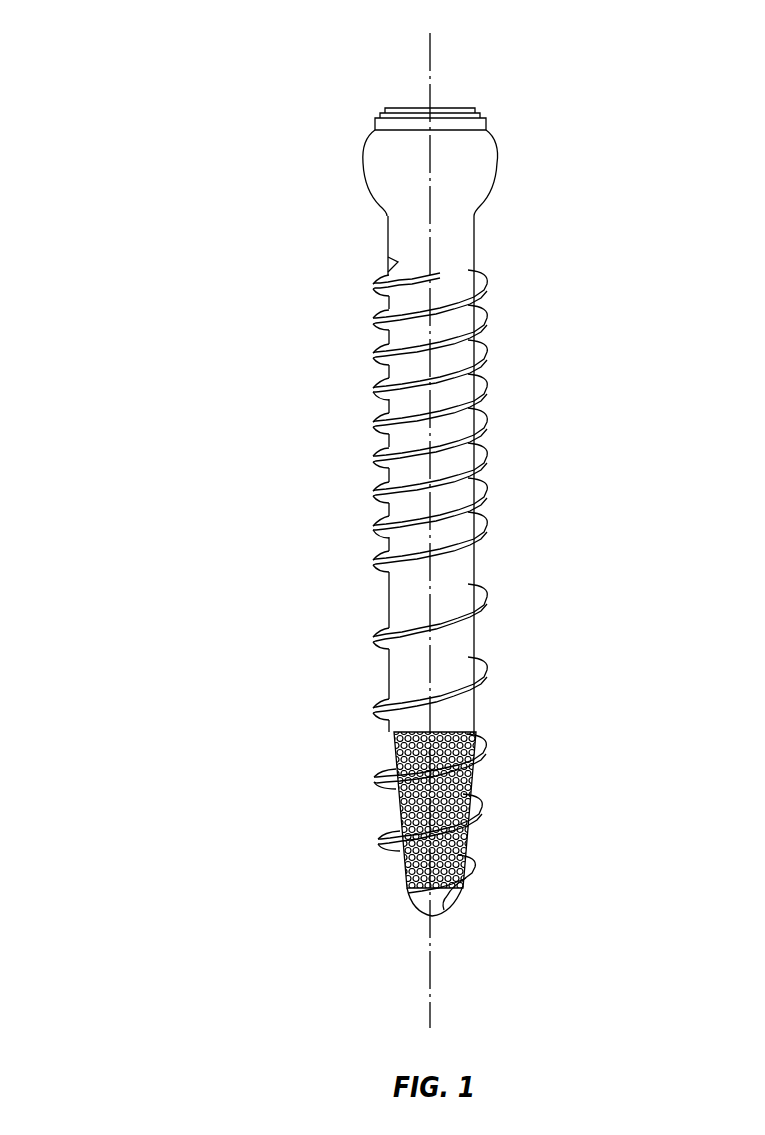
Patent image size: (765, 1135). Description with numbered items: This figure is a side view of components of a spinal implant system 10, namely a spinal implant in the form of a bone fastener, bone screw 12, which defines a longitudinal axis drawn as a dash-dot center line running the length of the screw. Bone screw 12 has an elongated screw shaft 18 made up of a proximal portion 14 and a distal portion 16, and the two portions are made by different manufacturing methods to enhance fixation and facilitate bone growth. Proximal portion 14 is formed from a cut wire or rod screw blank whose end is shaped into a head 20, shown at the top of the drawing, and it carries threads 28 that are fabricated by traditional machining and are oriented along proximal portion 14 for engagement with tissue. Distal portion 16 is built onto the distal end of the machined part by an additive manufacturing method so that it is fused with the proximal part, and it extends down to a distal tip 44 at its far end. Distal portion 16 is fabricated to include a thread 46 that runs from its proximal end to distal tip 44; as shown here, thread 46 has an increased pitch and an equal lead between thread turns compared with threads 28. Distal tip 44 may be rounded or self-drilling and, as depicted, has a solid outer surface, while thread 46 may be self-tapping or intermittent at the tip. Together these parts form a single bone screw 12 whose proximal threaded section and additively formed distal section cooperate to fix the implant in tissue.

The spinal implant system 10 is at (66, 183).
The bone screw 12 is at (157, 413).
The proximal portion 14 is at (596, 343).
The distal portion 16 is at (540, 814).
The screw shaft 18 is at (287, 613).
The head 20 is at (558, 128).
The threads 28 is at (487, 450).
The distal tip 44 is at (443, 892).
The thread 46 is at (487, 676).